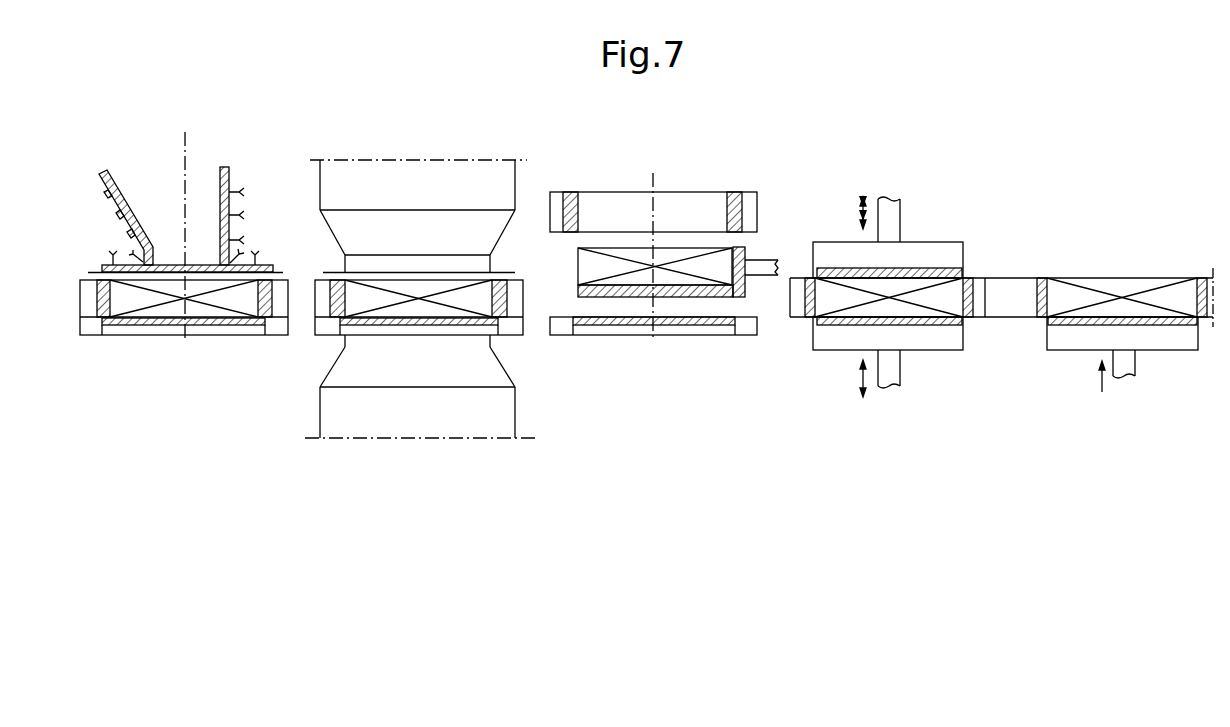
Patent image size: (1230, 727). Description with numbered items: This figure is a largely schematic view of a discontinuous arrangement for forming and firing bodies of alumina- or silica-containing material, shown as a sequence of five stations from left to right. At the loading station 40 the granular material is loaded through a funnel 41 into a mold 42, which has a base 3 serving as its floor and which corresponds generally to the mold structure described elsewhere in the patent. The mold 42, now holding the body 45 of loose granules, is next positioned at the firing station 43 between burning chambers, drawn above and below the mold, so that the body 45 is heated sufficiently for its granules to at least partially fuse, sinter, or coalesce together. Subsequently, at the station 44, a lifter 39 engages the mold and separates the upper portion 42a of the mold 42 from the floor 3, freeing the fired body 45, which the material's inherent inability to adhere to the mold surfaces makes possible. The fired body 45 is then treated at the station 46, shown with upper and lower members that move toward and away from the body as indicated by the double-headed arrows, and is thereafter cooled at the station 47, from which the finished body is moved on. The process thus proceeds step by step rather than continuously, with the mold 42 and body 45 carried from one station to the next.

The base 3 is at (153, 325).
The lifter 39 is at (762, 265).
The loading station 40 is at (189, 159).
The funnel 41 is at (229, 178).
The mold 42 is at (208, 310).
The upper portion of the mold 42a is at (737, 200).
The firing station 43 is at (498, 152).
The separating station 44 is at (721, 170).
The body 45 is at (622, 253).
The treating station 46 is at (916, 194).
The cooling station 47 is at (1140, 249).